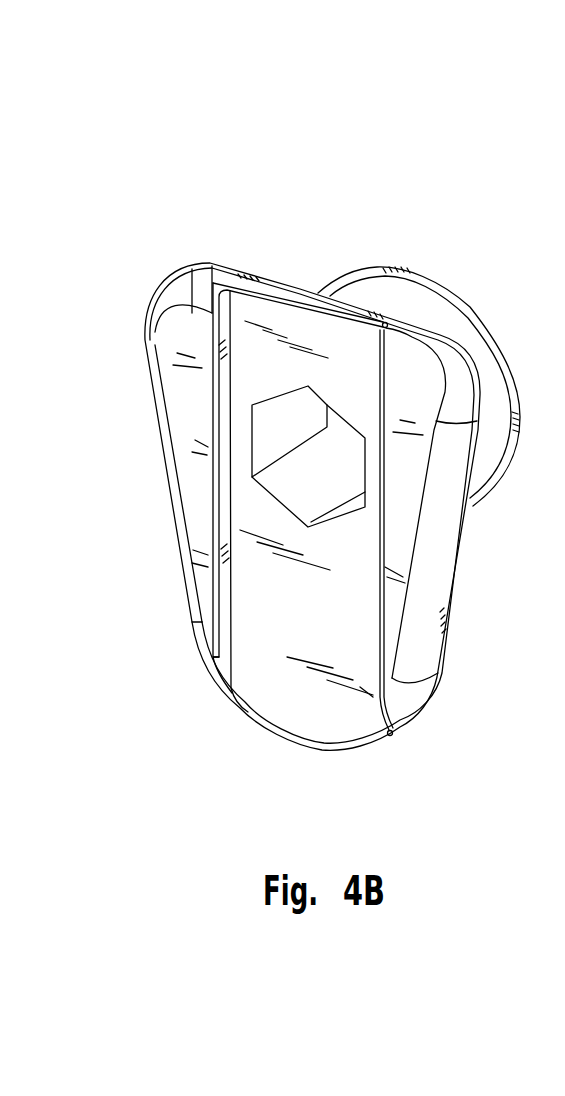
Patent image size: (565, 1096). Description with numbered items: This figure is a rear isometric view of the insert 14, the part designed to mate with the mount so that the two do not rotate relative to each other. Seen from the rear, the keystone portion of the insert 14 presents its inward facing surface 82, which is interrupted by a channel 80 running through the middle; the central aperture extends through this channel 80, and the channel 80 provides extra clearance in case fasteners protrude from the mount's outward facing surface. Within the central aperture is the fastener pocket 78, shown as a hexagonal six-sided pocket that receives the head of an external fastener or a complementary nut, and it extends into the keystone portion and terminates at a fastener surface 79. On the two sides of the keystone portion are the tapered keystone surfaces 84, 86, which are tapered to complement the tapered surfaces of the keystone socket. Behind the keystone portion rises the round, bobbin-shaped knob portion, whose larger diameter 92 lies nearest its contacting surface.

The insert 14 is at (329, 184).
The fastener pocket 78 is at (297, 478).
The fastener surface 79 is at (347, 433).
The channel 80 is at (295, 695).
The inward facing surface 82 is at (180, 347).
The keystone surface 84 is at (448, 620).
The keystone surface 86 is at (166, 462).
The larger diameter 92 is at (431, 285).